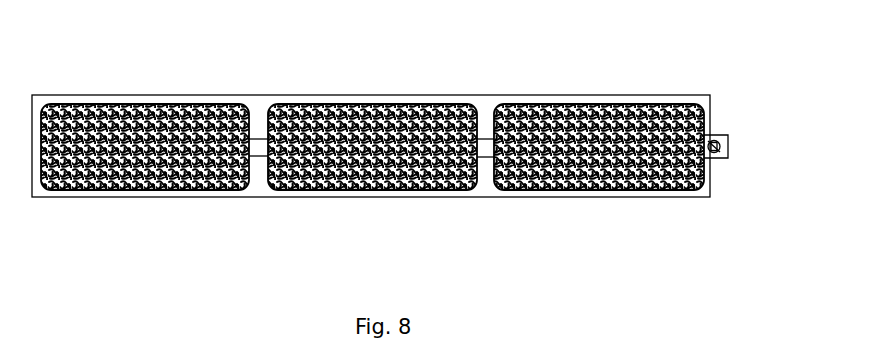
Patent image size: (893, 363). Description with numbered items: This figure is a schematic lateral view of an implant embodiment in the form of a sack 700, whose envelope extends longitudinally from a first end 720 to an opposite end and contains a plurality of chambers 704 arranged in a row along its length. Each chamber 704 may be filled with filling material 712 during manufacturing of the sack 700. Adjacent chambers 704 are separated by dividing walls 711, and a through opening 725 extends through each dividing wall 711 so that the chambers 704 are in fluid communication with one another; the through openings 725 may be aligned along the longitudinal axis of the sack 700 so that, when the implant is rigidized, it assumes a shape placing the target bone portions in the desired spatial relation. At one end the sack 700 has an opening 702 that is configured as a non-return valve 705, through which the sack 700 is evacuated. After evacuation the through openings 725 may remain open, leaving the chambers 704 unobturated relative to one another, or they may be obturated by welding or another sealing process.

The sack 700 is at (542, 98).
The first end 720 is at (707, 108).
The filling material 712 is at (142, 138).
The chambers 704 is at (373, 108).
The through opening 725 is at (259, 150).
The dividing walls 711 is at (485, 173).
The non-return valve 705 is at (727, 137).
The opening 702 is at (722, 160).